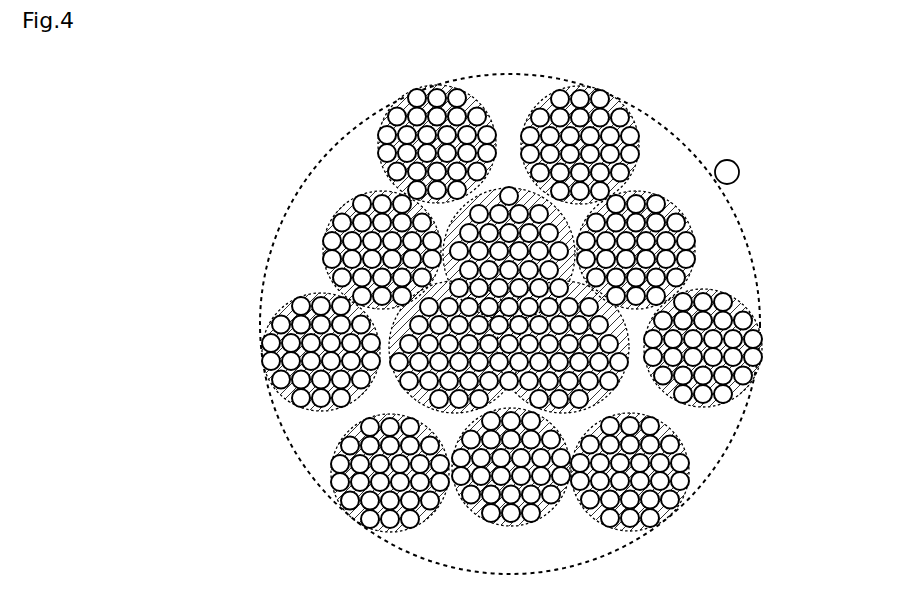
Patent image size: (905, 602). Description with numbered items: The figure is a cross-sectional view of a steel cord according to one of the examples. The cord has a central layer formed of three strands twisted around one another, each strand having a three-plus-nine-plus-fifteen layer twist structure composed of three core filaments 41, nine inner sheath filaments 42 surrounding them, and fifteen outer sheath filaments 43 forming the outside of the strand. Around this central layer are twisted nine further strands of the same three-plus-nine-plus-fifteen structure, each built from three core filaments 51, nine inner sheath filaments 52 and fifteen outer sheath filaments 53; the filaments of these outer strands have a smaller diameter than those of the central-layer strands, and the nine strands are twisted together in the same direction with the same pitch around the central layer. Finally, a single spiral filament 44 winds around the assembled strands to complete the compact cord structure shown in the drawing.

The core filament 41 is at (571, 345).
The inner sheath filament 42 is at (612, 360).
The outer sheath filament 43 is at (627, 390).
The spiral filament 44 is at (739, 172).
The core filament 51 is at (622, 117).
The inner sheath filament 52 is at (632, 136).
The outer sheath filament 53 is at (622, 172).